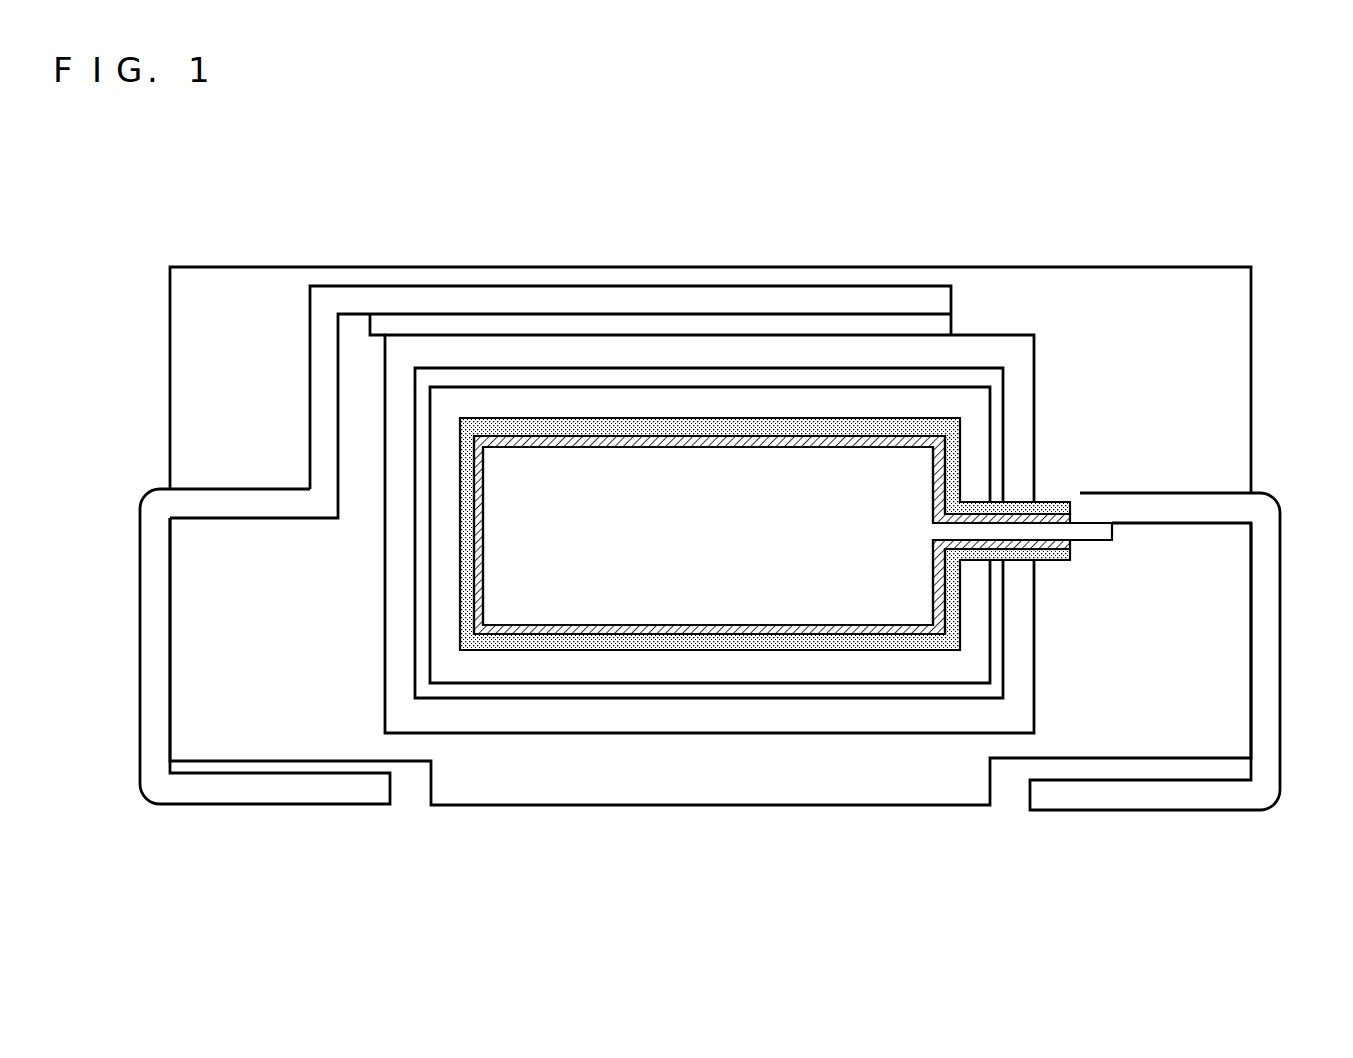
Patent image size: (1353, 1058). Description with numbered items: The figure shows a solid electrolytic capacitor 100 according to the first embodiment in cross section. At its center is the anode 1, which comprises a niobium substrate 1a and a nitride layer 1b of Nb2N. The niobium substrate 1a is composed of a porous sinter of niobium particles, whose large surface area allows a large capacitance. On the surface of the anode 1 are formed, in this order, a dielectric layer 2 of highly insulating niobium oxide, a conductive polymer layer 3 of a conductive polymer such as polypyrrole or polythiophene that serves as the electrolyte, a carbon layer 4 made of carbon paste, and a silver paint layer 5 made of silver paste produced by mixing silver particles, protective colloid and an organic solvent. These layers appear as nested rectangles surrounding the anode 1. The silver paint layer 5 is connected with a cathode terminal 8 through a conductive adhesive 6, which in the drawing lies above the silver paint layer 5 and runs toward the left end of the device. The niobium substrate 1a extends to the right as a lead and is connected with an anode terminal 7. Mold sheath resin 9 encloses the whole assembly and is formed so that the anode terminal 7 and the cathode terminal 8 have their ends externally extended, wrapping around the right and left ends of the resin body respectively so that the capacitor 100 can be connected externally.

The electrolytic capacitor 100 is at (1290, 182).
The anode 1 is at (793, 677).
The niobium substrate 1a is at (633, 587).
The nitride layer 1b is at (683, 628).
The dielectric layer 2 is at (772, 640).
The conductive polymer layer 3 is at (835, 665).
The carbon layer 4 is at (902, 692).
The silver paint layer 5 is at (612, 355).
The conductive adhesive 6 is at (533, 327).
The anode terminal 7 is at (1262, 609).
The cathode terminal 8 is at (157, 612).
The mold sheath resin 9 is at (202, 362).